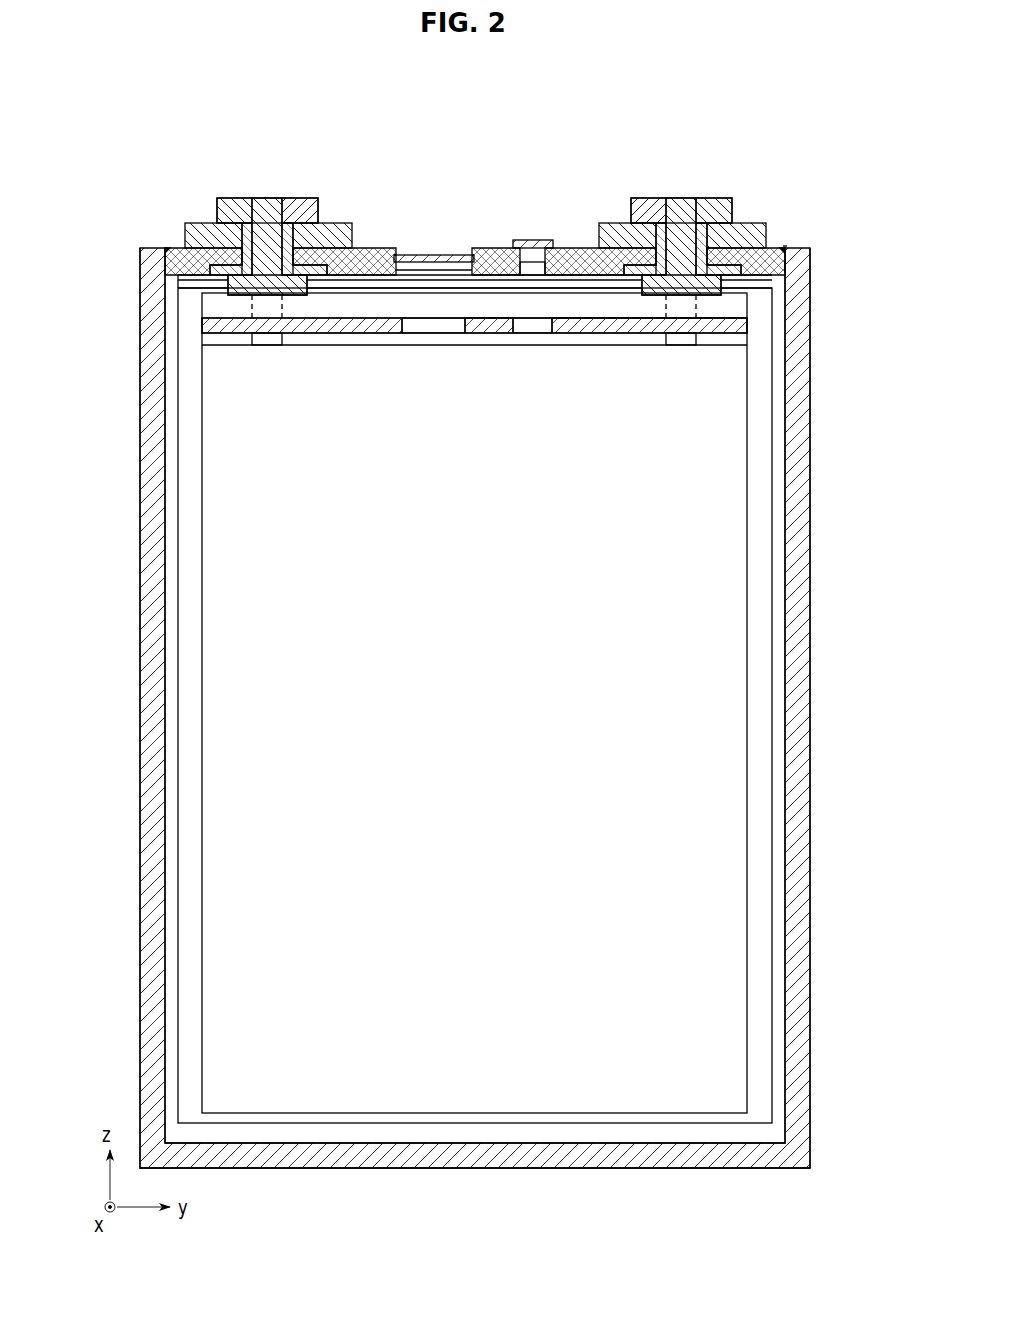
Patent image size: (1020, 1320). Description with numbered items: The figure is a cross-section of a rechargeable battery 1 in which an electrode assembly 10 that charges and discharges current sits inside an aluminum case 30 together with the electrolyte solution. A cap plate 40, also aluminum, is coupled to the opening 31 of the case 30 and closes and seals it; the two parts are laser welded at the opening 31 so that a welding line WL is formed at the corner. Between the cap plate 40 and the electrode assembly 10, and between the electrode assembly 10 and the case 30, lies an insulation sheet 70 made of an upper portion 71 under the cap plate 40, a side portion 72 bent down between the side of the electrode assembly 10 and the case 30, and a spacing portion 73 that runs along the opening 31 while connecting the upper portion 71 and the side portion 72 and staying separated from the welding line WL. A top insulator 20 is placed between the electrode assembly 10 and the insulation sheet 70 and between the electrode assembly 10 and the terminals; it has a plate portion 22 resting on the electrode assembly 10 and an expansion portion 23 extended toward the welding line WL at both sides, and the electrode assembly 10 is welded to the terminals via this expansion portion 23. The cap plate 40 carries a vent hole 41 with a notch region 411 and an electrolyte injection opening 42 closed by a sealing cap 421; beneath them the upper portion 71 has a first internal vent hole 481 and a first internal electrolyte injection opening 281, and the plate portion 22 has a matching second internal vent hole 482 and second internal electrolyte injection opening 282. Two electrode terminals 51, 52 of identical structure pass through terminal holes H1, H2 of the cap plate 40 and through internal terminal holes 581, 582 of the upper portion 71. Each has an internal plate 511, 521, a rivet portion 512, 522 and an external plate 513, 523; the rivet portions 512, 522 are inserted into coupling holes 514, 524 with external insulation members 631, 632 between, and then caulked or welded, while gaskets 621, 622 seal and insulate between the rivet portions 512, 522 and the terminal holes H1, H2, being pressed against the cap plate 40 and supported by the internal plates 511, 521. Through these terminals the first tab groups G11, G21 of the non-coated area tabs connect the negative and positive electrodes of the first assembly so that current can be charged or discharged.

The rechargeable battery 1 is at (468, 86).
The electrode assembly 10 is at (747, 398).
The top insulator 20 is at (747, 307).
The plate portion 22 is at (625, 320).
The expansion portion 23 is at (490, 310).
The case 30 is at (810, 500).
The opening 31 is at (785, 282).
The cap plate 40 is at (372, 250).
The vent hole 41 is at (410, 255).
The notch 411 is at (438, 257).
The electrolyte injection opening 42 is at (525, 268).
The sealing cap 421 is at (530, 243).
The first internal vent hole 481 is at (427, 293).
The second internal vent hole 482 is at (435, 332).
The first internal electrolyte injection opening 281 is at (568, 332).
The second internal electrolyte injection opening 282 is at (530, 332).
The electrode terminal 51 is at (294, 132).
The internal plate 511 is at (268, 205).
The rivet portion 512 is at (296, 205).
The external plate 513 is at (228, 198).
The coupling hole 514 is at (296, 226).
The electrode terminal 52 is at (794, 132).
The internal plate 521 is at (700, 205).
The rivet portion 522 is at (676, 205).
The external plate 523 is at (722, 203).
The coupling hole 524 is at (668, 222).
The internal terminal hole 581 is at (316, 297).
The internal terminal hole 582 is at (628, 298).
The gasket 621 is at (228, 262).
The gasket 622 is at (738, 265).
The external insulation member 631 is at (196, 228).
The external insulation member 632 is at (742, 232).
The insulation sheet 70 is at (97, 278).
The upper portion 71 is at (200, 280).
The side portion 72 is at (187, 345).
The spacing portion 73 is at (200, 290).
The terminal hole H1 is at (300, 250).
The terminal hole H2 is at (662, 250).
The welding line WL is at (165, 250).
The first tab group G11 is at (267, 312).
The first tab group G21 is at (681, 312).